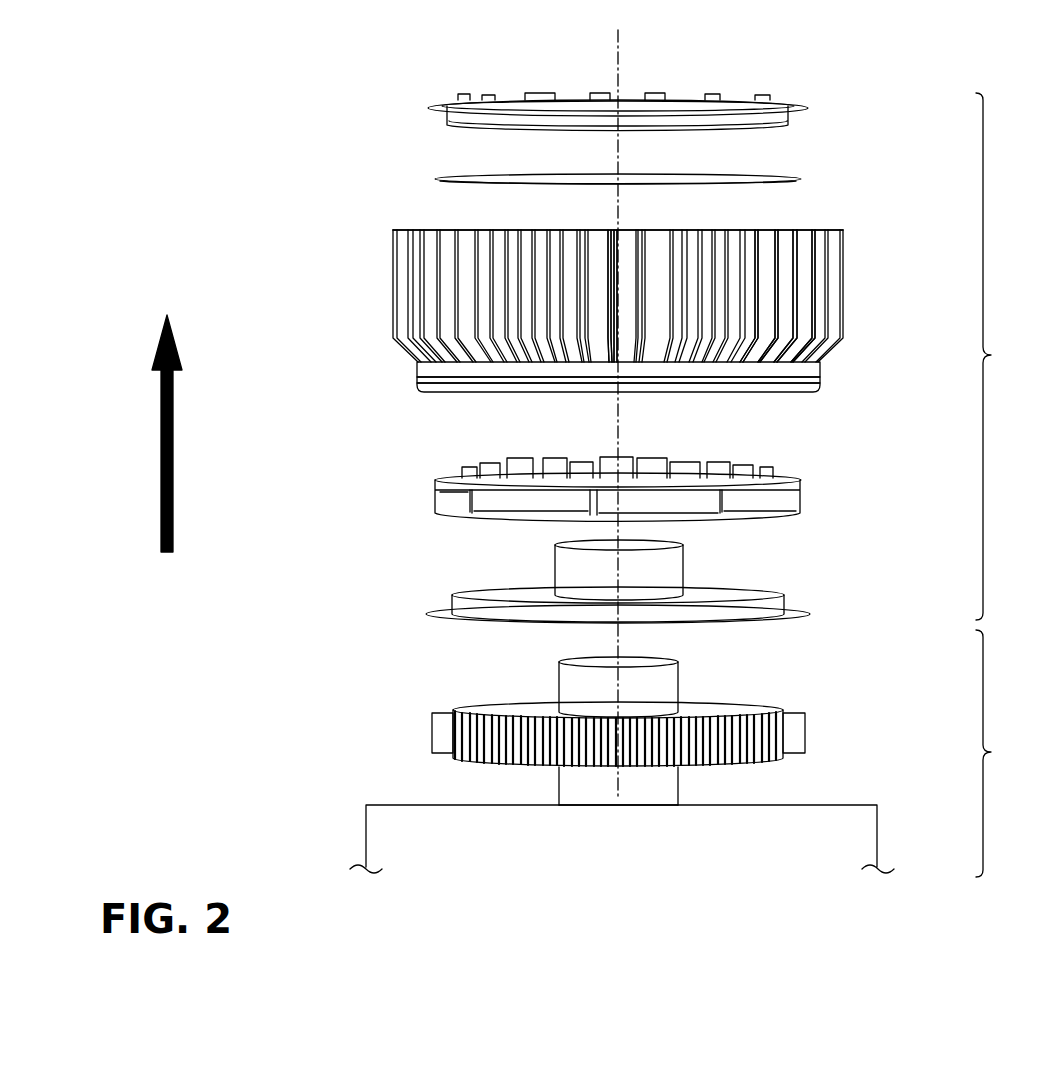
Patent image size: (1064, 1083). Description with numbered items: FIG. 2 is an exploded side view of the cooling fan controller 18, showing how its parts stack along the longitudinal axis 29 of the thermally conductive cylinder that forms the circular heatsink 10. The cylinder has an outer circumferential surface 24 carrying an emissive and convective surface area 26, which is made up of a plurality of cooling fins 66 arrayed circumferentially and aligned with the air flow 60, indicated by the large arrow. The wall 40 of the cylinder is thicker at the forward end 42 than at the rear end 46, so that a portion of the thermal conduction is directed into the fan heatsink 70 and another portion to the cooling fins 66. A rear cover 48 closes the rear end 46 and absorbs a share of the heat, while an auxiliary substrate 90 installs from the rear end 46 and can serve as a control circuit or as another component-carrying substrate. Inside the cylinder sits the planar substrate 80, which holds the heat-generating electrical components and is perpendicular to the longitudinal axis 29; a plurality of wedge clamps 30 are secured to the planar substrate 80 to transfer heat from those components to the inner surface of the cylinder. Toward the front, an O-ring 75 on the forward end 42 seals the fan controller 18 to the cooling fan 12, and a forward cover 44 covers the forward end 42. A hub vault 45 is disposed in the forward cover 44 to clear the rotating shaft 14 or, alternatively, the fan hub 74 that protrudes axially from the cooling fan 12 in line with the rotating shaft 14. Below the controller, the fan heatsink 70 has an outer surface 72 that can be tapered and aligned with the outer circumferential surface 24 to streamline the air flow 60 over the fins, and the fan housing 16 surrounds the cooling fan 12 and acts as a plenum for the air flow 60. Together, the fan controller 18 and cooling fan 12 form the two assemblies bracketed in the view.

The circular heatsink 10 is at (822, 373).
The cooling fan 12 is at (1007, 753).
The rotating shaft 14 is at (647, 800).
The fan housing 16 is at (877, 828).
The cooling fan controller 18 is at (1008, 356).
The outer circumferential surface 24 is at (598, 243).
The emissive and convective surface area 26 is at (462, 243).
The longitudinal axis 29 is at (622, 40).
The wedge clamps 30 is at (608, 478).
The wall 40 is at (747, 228).
The forward end 42 is at (622, 397).
The forward cover 44 is at (432, 606).
The hub vault 45 is at (674, 567).
The rear end 46 is at (662, 270).
The rear cover 48 is at (453, 105).
The air flow 60 is at (175, 447).
The cooling fins 66 is at (803, 232).
The fan heatsink 70 is at (658, 731).
The outer surface 72 is at (476, 722).
The fan hub 74 is at (667, 690).
The O-ring 75 is at (415, 381).
The planar substrate 80 is at (772, 468).
The auxiliary substrate 90 is at (437, 178).